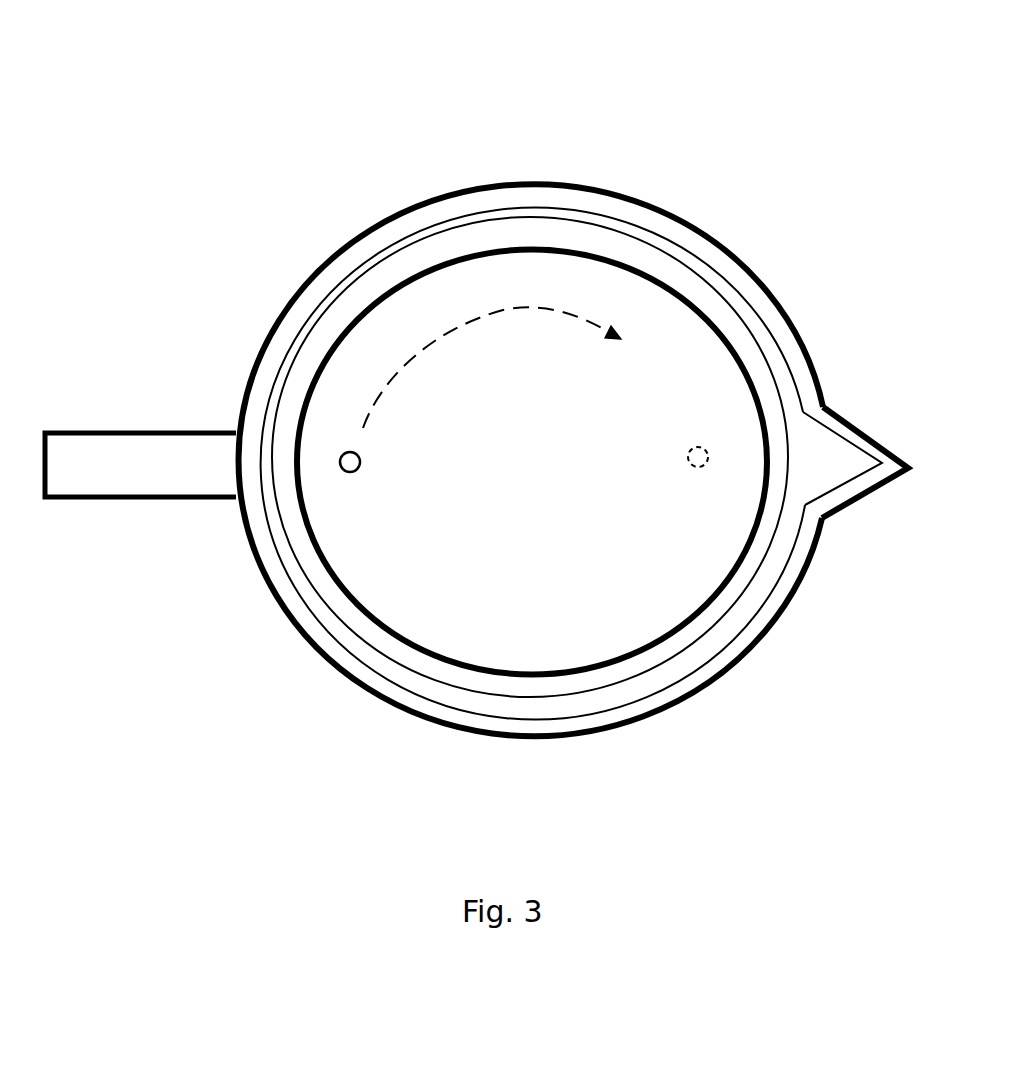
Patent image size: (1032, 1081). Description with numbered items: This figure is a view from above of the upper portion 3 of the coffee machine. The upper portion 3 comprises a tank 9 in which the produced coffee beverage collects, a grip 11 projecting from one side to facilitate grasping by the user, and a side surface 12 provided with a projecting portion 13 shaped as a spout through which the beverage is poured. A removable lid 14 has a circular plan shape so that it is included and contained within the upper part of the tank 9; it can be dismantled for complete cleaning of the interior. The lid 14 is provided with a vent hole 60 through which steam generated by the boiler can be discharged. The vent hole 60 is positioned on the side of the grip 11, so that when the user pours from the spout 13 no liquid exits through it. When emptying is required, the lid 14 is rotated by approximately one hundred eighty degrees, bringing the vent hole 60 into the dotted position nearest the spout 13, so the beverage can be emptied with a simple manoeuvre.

The upper portion 3 is at (783, 165).
The tank 9 is at (272, 282).
The removable lid 14 is at (497, 278).
The side surface 12 is at (803, 340).
The projecting portion 13 is at (860, 493).
The grip 11 is at (80, 442).
The vent hole 60 is at (350, 473).